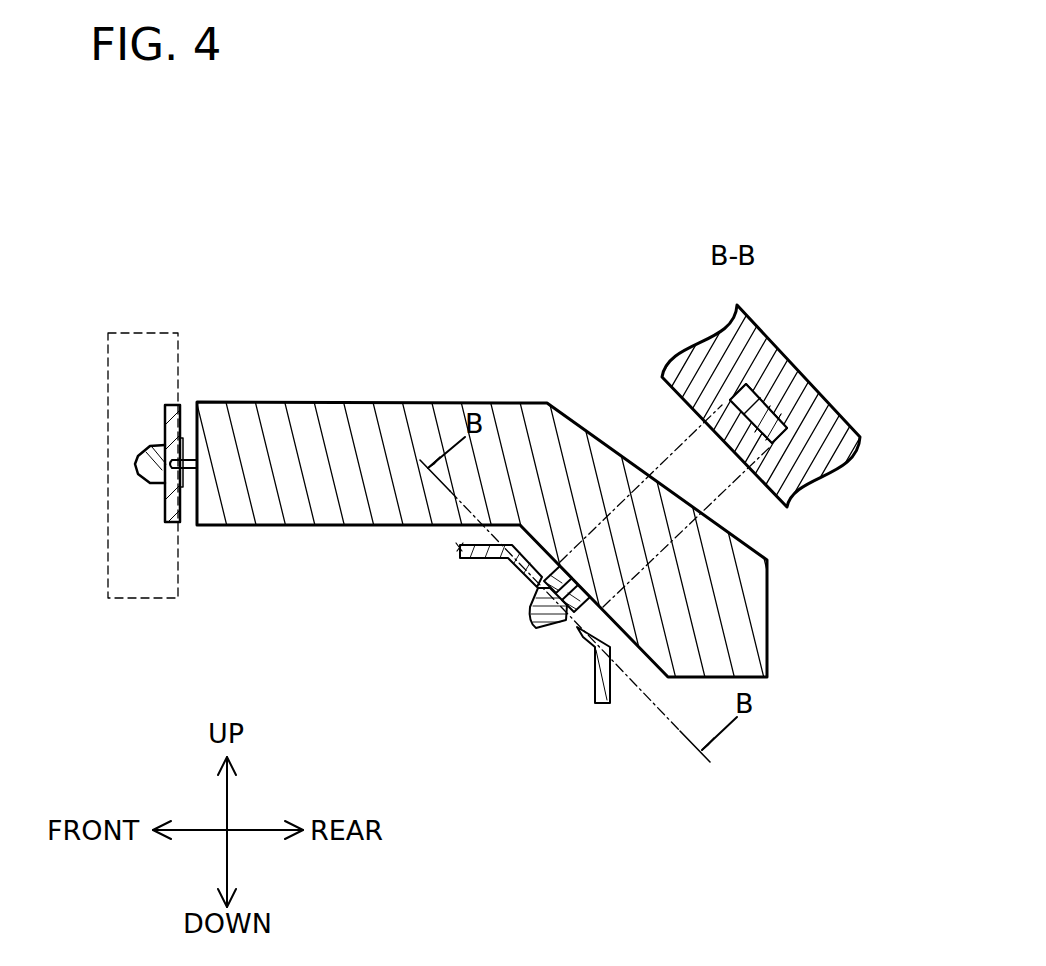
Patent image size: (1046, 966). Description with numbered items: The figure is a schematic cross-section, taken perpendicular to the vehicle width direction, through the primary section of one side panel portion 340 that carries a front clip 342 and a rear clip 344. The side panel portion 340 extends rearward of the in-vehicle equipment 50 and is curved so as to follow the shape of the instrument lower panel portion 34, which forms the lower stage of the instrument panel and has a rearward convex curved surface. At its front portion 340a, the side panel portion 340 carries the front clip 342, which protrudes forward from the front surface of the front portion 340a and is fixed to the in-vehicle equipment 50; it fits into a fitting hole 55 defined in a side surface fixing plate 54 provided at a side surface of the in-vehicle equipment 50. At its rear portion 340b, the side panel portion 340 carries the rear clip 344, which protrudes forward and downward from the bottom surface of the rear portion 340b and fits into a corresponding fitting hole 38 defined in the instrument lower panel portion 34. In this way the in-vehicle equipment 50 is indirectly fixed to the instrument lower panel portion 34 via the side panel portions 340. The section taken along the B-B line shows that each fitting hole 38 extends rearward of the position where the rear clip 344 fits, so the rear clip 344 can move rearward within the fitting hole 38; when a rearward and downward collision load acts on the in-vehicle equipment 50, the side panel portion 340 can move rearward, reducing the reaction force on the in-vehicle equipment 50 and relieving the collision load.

The in-vehicle equipment 50 is at (132, 333).
The side surface fixing plate 54 is at (172, 420).
The fitting hole 55 is at (143, 464).
The front clip 342 is at (160, 472).
The side panel portion 340 is at (332, 443).
The front portion 340a is at (228, 453).
The rear portion 340b is at (735, 623).
The instrument lower panel portion 34 is at (483, 553).
The rear clip 344 is at (532, 615).
The fitting hole 38 is at (578, 627).